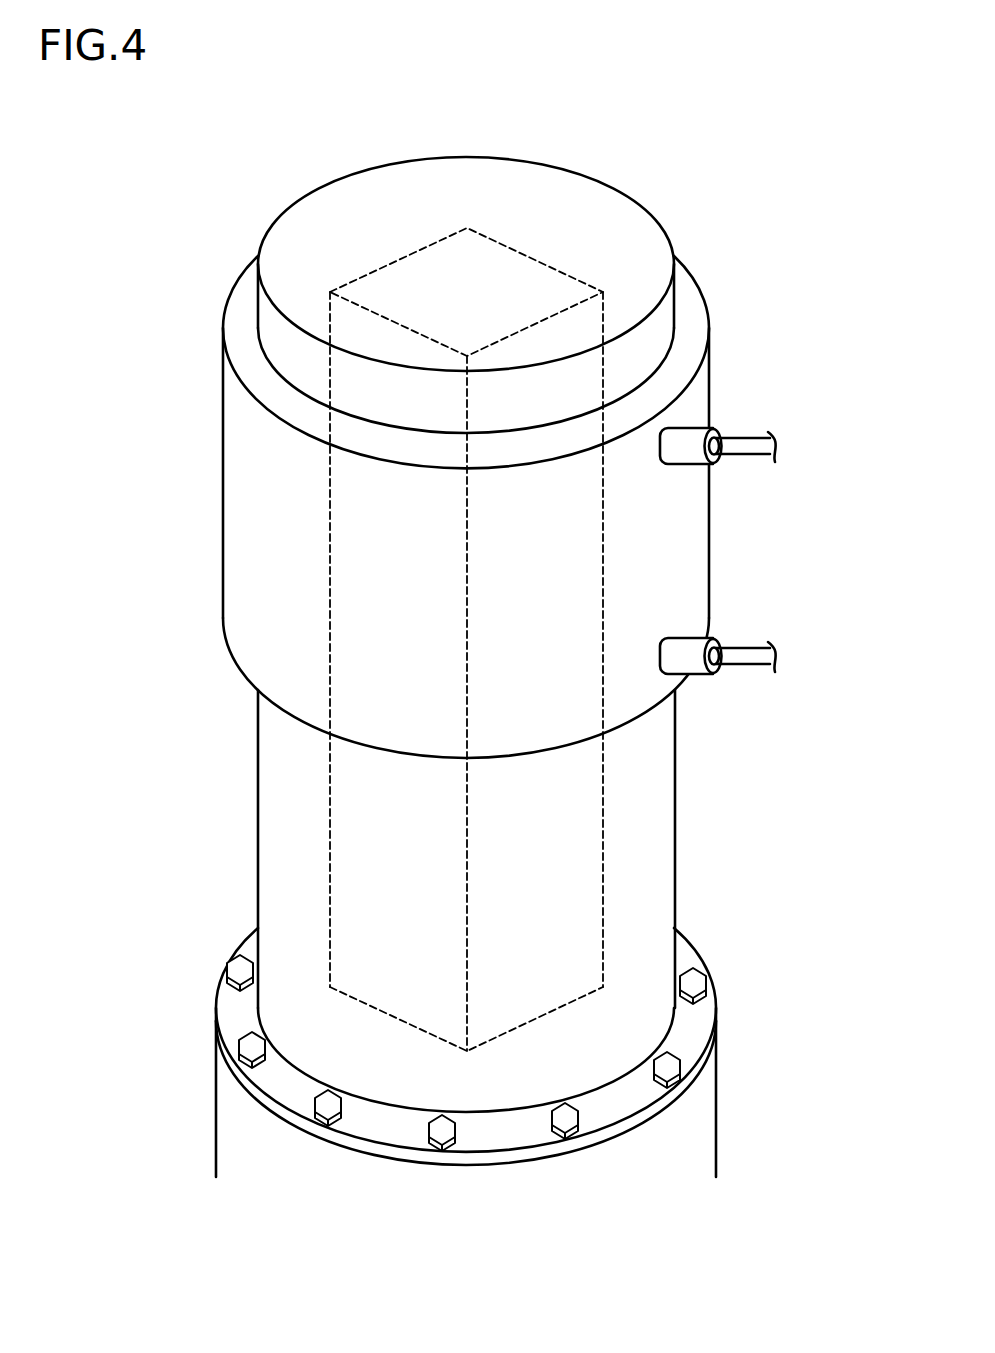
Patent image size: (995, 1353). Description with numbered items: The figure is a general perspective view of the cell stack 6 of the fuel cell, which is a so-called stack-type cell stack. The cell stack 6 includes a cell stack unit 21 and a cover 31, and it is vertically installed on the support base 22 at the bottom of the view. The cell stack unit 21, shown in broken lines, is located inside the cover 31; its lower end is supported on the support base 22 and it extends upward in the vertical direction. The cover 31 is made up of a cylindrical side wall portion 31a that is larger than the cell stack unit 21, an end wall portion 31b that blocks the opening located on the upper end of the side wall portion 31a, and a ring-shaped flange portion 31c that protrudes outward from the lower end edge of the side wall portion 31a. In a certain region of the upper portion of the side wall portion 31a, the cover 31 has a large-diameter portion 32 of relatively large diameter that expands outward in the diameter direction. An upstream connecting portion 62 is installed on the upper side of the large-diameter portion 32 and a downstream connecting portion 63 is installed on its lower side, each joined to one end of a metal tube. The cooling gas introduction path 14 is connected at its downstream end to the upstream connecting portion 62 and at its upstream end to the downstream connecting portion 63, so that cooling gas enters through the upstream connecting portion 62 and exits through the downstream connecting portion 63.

The cell stack 6 is at (571, 142).
The cooling gas introduction path 14 is at (768, 447).
The cell stack unit 21 is at (383, 610).
The support base 22 is at (692, 1135).
The cover 31 is at (483, 661).
The side wall portion 31a is at (668, 840).
The end wall portion 31b is at (618, 213).
The flange portion 31c is at (692, 1028).
The large-diameter portion 32 is at (250, 490).
The upstream connecting portion 62 is at (686, 441).
The downstream connecting portion 63 is at (686, 651).